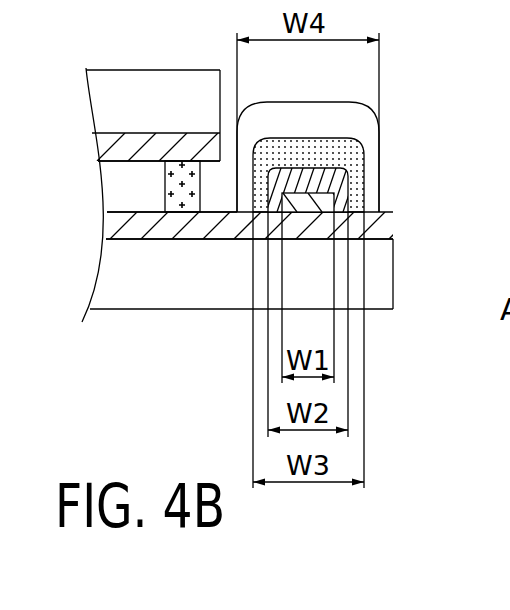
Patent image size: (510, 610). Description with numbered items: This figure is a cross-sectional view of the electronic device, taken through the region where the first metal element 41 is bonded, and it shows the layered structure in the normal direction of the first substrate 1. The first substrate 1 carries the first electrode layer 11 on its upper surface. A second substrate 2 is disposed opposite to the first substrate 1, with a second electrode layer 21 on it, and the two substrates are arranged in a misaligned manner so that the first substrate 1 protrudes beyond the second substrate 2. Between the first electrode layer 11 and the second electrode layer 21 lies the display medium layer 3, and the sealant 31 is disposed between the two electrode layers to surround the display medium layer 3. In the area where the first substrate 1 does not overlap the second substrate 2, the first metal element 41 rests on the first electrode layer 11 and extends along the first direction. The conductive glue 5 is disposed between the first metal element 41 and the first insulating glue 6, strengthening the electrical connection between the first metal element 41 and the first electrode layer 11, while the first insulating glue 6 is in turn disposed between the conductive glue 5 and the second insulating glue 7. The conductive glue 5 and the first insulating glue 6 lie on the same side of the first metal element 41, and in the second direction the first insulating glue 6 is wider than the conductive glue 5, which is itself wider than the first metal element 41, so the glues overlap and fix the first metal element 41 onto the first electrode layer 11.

The first substrate 1 is at (113, 289).
The first electrode layer 11 is at (115, 222).
The second substrate 2 is at (98, 110).
The second electrode layer 21 is at (110, 150).
The display medium layer 3 is at (115, 175).
The sealant 31 is at (173, 195).
The first metal element 41 is at (330, 203).
The conductive glue 5 is at (337, 180).
The first insulating glue 6 is at (353, 157).
The second insulating glue 7 is at (357, 122).